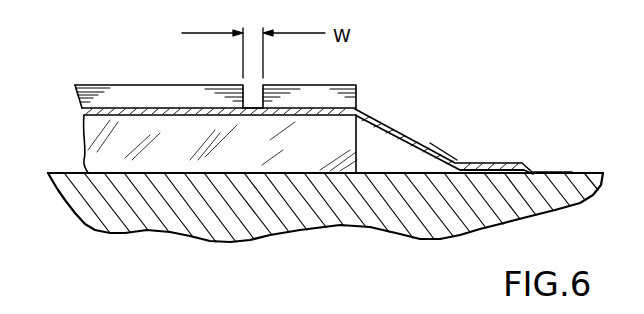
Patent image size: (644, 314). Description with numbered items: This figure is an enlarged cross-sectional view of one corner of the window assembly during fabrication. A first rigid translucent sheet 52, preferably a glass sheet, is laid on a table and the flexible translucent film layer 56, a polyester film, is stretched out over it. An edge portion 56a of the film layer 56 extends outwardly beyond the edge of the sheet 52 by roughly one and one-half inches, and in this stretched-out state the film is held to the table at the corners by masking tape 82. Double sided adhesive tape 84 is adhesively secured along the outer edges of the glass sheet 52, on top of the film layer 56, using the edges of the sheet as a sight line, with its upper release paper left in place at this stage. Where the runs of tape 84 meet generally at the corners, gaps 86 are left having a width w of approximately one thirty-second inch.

The first rigid translucent sheet 52 is at (83, 149).
The flexible translucent film layer 56 is at (127, 100).
The edge portion 56a is at (394, 126).
The masking tape 82 is at (508, 163).
The double sided adhesive tape 84 is at (185, 60).
The gaps 86 is at (250, 93).